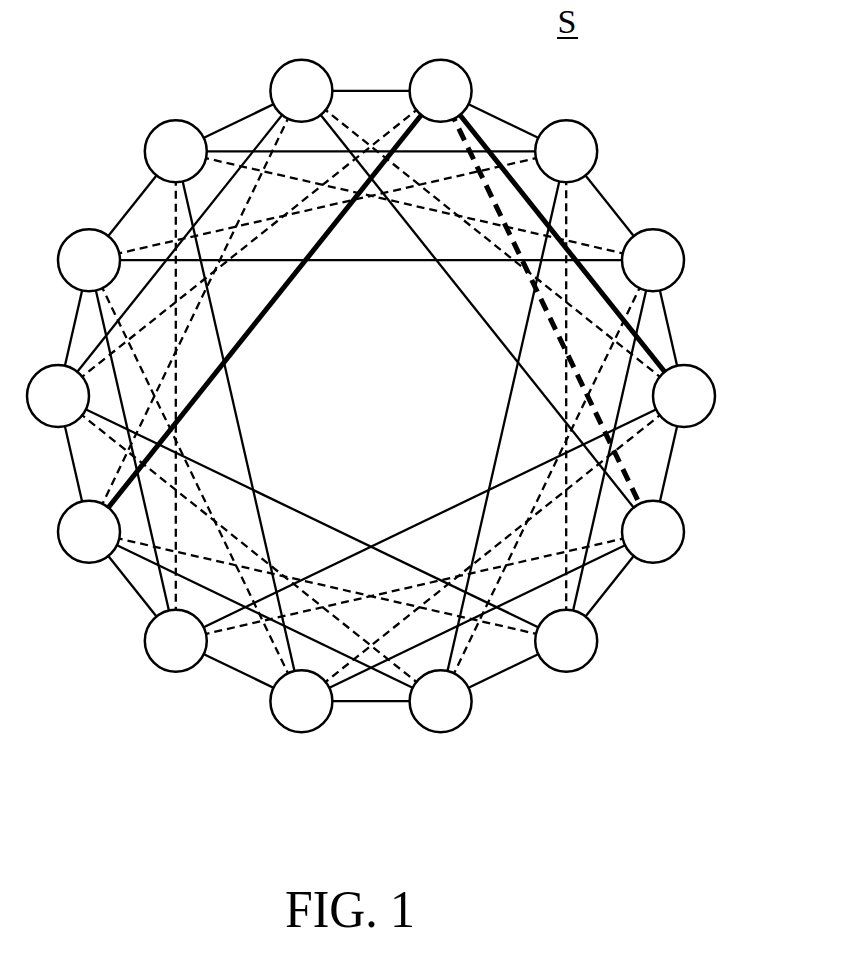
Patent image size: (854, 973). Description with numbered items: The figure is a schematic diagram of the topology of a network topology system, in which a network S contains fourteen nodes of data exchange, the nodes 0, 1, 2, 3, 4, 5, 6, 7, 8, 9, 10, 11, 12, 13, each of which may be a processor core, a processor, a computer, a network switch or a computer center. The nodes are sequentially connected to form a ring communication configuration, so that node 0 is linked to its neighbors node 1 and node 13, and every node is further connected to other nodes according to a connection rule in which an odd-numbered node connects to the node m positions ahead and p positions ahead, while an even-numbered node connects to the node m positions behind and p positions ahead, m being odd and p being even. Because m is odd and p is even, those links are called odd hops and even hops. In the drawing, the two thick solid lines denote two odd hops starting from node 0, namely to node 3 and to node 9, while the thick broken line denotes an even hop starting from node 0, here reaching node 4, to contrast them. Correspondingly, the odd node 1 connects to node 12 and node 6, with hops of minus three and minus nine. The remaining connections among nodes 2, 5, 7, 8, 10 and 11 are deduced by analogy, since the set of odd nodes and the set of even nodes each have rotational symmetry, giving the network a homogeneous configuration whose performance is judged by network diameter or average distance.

The node 0 is at (441, 91).
The node 1 is at (566, 151).
The node 2 is at (653, 260).
The node 3 is at (684, 396).
The node 4 is at (653, 532).
The node 5 is at (566, 641).
The node 6 is at (441, 701).
The node 7 is at (301, 701).
The node 8 is at (176, 641).
The node 9 is at (89, 532).
The node 10 is at (58, 396).
The node 11 is at (89, 260).
The node 12 is at (176, 151).
The node 13 is at (301, 91).